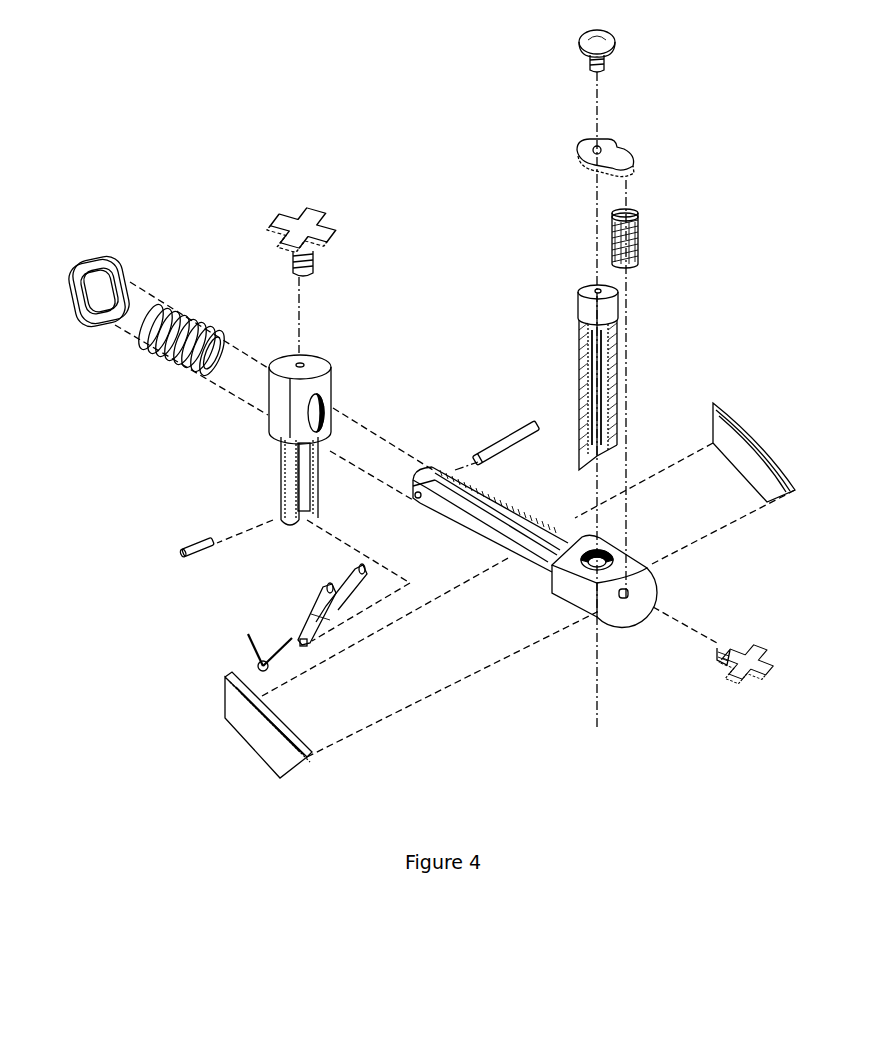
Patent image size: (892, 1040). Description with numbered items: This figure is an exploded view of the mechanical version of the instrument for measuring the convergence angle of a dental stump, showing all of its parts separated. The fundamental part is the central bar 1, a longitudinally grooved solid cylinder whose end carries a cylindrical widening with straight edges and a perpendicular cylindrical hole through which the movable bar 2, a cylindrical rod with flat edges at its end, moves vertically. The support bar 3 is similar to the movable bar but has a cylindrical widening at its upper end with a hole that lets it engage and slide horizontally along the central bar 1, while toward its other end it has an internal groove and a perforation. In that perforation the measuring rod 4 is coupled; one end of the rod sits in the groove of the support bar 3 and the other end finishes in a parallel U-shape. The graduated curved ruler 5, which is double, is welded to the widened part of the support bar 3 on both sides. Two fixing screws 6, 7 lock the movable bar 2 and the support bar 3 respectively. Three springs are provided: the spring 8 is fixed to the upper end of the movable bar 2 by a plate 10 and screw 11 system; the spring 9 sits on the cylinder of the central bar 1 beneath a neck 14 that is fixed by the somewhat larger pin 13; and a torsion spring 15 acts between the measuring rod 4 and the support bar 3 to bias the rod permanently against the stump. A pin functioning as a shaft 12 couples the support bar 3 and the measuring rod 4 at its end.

The central bar 1 is at (535, 547).
The movable bar 2 is at (590, 377).
The support bar 3 is at (306, 429).
The measuring rod 4 is at (332, 605).
The graduated curved ruler 5 is at (510, 592).
The fixing screw 6 is at (746, 664).
The fixing screw 7 is at (301, 227).
The spring 8 is at (637, 238).
The spring 9 is at (182, 326).
The plate 10 is at (606, 145).
The screw 11 is at (611, 43).
The shaft pin 12 is at (191, 534).
The pin 13 is at (506, 436).
The neck 14 is at (99, 275).
The torsion spring 15 is at (255, 647).